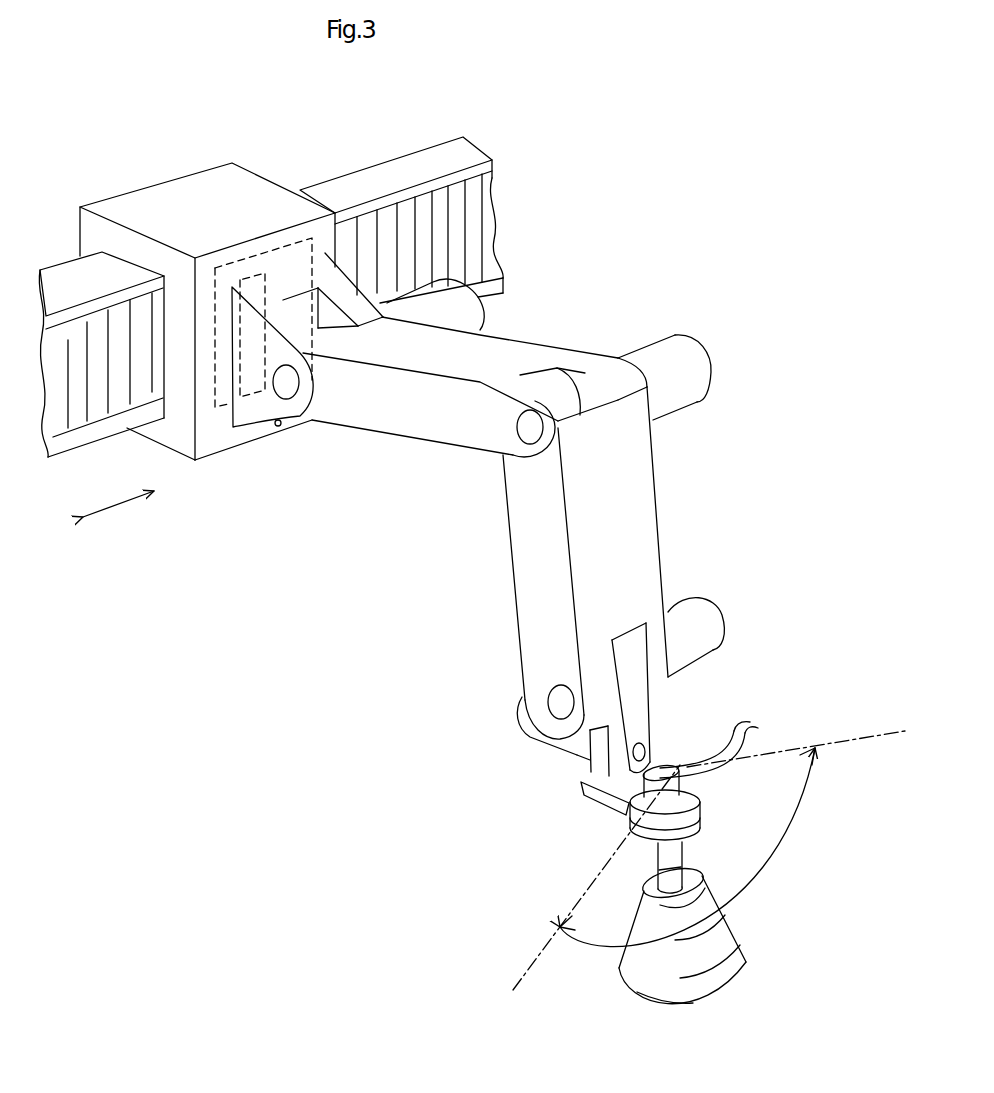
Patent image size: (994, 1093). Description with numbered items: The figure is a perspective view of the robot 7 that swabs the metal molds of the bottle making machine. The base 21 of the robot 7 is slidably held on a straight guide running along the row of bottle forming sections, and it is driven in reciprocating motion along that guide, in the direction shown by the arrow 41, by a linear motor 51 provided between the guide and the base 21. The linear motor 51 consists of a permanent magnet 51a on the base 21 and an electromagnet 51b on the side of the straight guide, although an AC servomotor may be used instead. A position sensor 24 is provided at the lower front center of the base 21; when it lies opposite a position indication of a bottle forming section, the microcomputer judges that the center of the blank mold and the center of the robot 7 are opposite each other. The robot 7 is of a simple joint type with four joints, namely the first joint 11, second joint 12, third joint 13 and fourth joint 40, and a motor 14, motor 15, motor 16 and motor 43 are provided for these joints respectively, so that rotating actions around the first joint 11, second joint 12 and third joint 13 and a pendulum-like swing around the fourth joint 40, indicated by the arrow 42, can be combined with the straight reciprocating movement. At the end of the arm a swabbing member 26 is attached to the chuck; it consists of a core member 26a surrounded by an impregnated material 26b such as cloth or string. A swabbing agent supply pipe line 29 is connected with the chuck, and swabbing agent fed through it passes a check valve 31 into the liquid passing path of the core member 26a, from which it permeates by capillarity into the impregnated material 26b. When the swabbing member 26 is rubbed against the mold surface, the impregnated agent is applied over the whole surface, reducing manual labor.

The base 21 is at (223, 203).
The linear motor 51 is at (382, 94).
The permanent magnet 51a is at (272, 250).
The electromagnet 51b is at (352, 237).
The position sensor 24 is at (278, 427).
The first joint 11 is at (292, 390).
The motor 14 is at (483, 314).
The robot 7 is at (419, 442).
The second joint 12 is at (528, 436).
The motor 15 is at (684, 385).
The motor 16 is at (700, 637).
The third joint 13 is at (557, 706).
The motor 43 is at (518, 706).
The fourth joint 40 is at (644, 750).
The check valve 31 is at (598, 805).
The swabbing agent supply pipe line 29 is at (722, 766).
The swabbing member 26 is at (670, 946).
The core member 26a is at (675, 868).
The impregnated material 26b is at (683, 975).
The arrow 42 is at (745, 868).
The arrow 41 is at (138, 498).